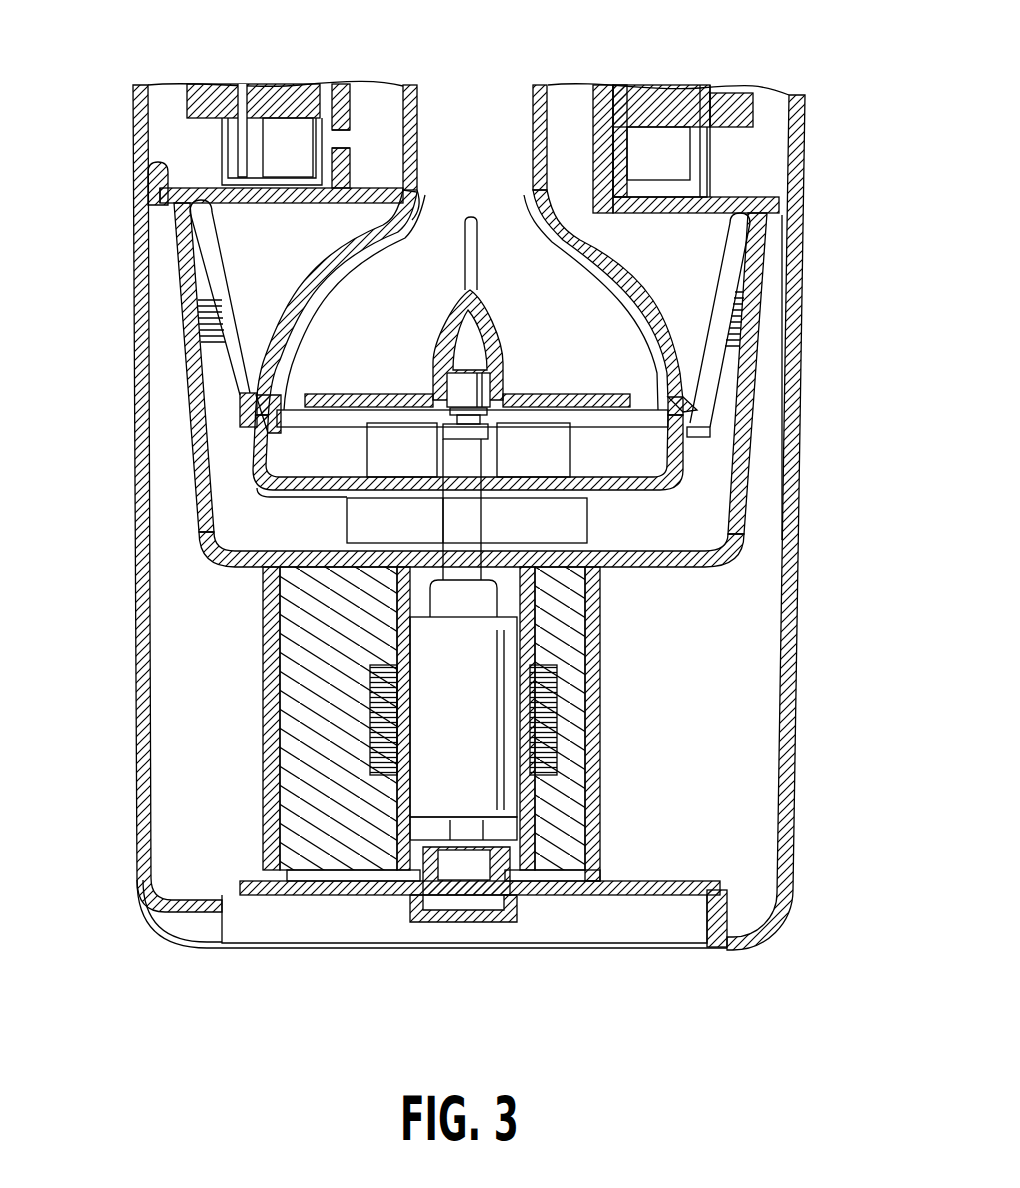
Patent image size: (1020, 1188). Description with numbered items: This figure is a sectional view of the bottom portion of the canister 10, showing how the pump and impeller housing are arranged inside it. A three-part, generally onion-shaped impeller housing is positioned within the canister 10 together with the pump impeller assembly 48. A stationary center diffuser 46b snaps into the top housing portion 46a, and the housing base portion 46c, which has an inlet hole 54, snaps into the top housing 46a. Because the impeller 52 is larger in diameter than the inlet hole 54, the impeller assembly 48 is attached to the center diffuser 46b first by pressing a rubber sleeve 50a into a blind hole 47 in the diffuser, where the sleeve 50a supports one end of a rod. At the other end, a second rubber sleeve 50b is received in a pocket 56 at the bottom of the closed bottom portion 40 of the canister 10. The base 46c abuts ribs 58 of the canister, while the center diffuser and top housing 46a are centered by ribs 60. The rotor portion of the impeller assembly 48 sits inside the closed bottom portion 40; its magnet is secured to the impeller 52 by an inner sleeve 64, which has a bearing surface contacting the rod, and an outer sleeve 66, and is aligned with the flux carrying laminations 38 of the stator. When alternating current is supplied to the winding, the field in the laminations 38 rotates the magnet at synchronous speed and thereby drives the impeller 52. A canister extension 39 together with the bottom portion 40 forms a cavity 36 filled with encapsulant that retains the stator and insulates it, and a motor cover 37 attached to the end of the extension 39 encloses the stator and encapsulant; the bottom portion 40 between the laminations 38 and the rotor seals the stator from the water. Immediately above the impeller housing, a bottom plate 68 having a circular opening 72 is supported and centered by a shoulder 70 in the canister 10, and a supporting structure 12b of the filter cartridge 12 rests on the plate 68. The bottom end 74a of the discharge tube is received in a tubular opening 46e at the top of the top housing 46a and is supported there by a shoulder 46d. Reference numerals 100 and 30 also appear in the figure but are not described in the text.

The canister 10 is at (140, 104).
The filter cartridge 12 is at (205, 90).
The supporting structure 12b is at (707, 160).
The cover insert 100 is at (367, 95).
The bottom end of the discharge tube 74a is at (427, 88).
The tubular opening 46e is at (478, 150).
The circular opening 72 is at (575, 160).
The bottom plate 68 is at (150, 183).
The shoulder 70 is at (172, 222).
The shoulder of the top housing portion 46d is at (373, 210).
The top housing portion 46a is at (603, 268).
The center diffuser 46b is at (500, 337).
The blind hole 47 is at (500, 373).
The rubber sleeve 50a is at (455, 352).
The ribs 60 is at (735, 318).
The impeller 52 is at (557, 462).
The housing base portion 46c is at (674, 476).
The inlet hole 54 is at (404, 490).
The inner sleeve 64 is at (478, 530).
The ribs 58 is at (650, 528).
The pump impeller assembly 48 is at (445, 600).
The canister extension 39 is at (270, 676).
The closed bottom portion 40 is at (533, 650).
The outer sleeve 66 is at (480, 737).
The flux carrying laminations 38 is at (546, 725).
The cavity 36 is at (590, 798).
The housing 30 is at (783, 736).
The motor cover 37 is at (330, 896).
The pocket 56 is at (443, 895).
The rubber sleeve 50b is at (477, 920).